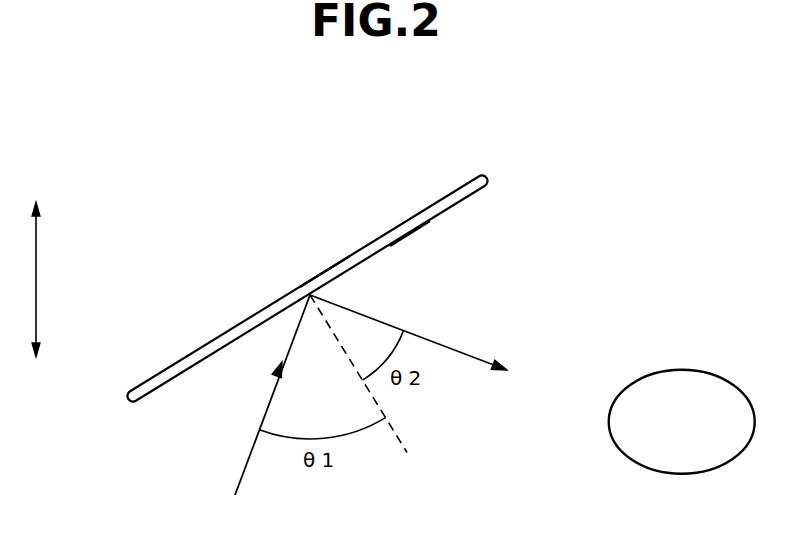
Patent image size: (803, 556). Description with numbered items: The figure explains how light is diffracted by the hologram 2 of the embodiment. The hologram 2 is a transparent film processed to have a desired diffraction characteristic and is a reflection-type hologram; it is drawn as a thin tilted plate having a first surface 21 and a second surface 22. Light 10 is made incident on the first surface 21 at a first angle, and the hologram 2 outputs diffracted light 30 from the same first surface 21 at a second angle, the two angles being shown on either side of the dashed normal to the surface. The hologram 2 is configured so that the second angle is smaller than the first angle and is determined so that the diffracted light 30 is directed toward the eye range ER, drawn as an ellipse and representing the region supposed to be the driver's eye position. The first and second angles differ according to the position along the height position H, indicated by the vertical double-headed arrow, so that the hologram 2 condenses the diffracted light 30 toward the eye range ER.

The hologram 2 is at (392, 230).
The first surface 21 is at (412, 232).
The second surface 22 is at (325, 268).
The incident light 10 is at (245, 465).
The diffracted light 30 is at (467, 352).
The height position H is at (26, 279).
The eye range ER is at (688, 393).